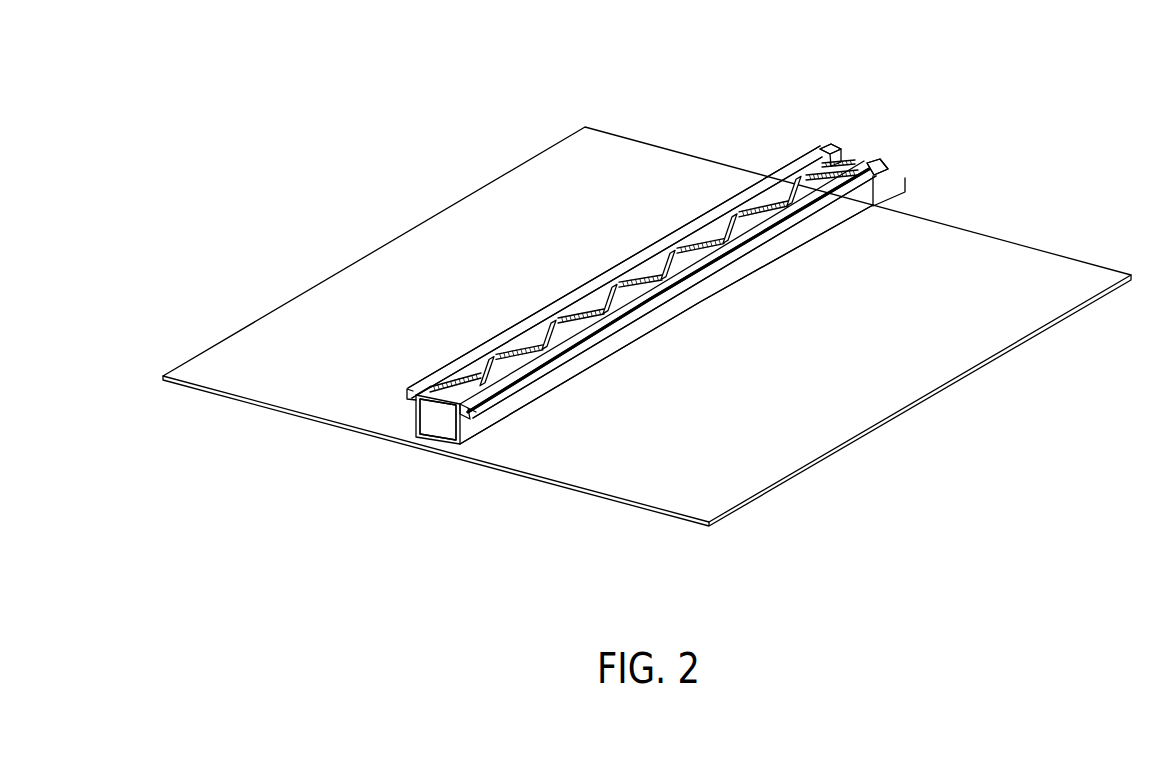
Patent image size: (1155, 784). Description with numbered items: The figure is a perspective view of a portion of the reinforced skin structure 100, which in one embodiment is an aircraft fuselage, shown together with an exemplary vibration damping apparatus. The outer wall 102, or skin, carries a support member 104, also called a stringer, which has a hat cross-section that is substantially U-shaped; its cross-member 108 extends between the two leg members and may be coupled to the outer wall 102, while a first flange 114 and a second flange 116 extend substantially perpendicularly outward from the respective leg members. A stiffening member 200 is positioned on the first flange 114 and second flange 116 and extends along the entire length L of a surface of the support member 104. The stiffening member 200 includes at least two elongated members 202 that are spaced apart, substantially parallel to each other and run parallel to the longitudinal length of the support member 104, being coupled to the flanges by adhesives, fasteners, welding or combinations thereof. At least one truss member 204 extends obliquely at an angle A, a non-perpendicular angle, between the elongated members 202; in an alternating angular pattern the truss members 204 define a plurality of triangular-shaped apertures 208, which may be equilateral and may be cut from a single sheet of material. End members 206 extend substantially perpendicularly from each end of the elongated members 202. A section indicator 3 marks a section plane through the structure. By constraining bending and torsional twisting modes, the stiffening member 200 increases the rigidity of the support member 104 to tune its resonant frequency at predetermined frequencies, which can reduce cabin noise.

The reinforced skin structure 100 is at (306, 97).
The outer wall 102 is at (975, 252).
The support member 104 is at (482, 428).
The cross-member 108 is at (430, 445).
The first flange 114 is at (886, 164).
The second flange 116 is at (828, 146).
The stiffening member 200 is at (774, 162).
The elongated members 202 is at (800, 166).
The truss member 204 is at (706, 312).
The end member 206 is at (430, 389).
The triangular-shaped apertures 208 is at (472, 375).
The section line 3- 3 is at (506, 154).
The angle A is at (674, 250).
The length L is at (483, 440).